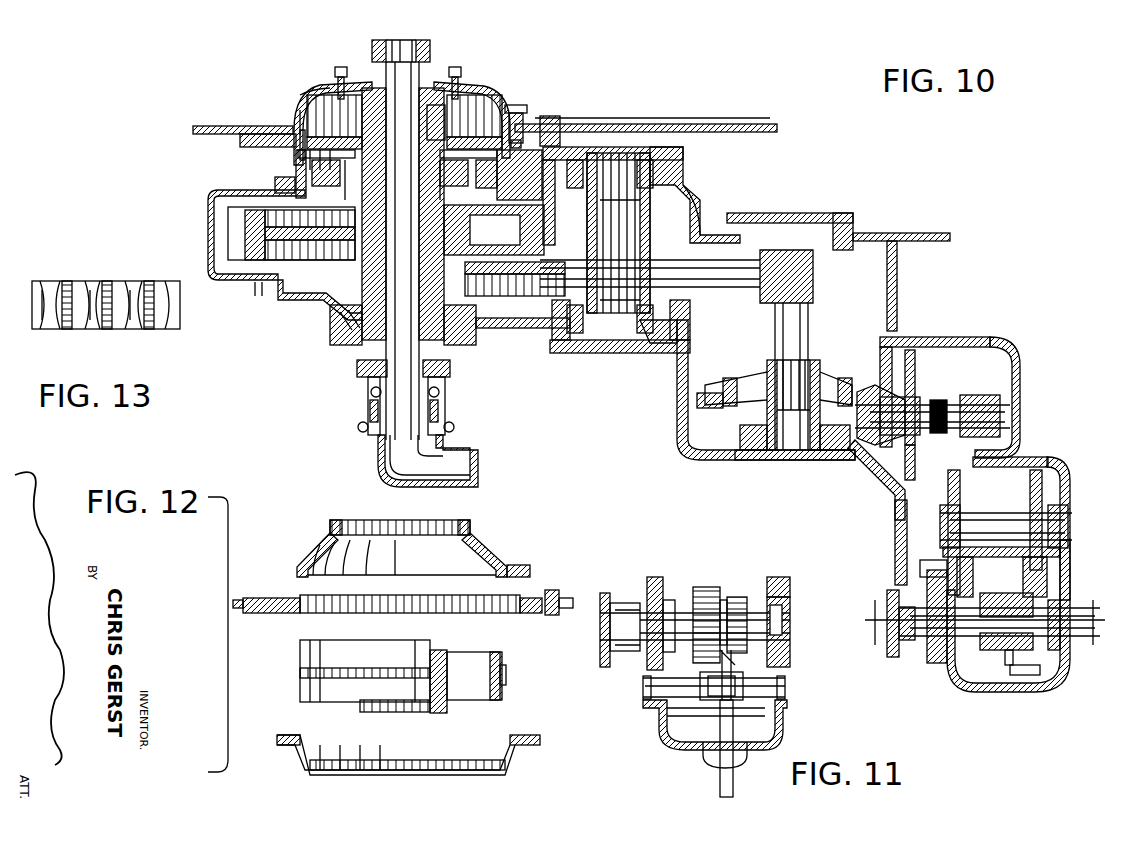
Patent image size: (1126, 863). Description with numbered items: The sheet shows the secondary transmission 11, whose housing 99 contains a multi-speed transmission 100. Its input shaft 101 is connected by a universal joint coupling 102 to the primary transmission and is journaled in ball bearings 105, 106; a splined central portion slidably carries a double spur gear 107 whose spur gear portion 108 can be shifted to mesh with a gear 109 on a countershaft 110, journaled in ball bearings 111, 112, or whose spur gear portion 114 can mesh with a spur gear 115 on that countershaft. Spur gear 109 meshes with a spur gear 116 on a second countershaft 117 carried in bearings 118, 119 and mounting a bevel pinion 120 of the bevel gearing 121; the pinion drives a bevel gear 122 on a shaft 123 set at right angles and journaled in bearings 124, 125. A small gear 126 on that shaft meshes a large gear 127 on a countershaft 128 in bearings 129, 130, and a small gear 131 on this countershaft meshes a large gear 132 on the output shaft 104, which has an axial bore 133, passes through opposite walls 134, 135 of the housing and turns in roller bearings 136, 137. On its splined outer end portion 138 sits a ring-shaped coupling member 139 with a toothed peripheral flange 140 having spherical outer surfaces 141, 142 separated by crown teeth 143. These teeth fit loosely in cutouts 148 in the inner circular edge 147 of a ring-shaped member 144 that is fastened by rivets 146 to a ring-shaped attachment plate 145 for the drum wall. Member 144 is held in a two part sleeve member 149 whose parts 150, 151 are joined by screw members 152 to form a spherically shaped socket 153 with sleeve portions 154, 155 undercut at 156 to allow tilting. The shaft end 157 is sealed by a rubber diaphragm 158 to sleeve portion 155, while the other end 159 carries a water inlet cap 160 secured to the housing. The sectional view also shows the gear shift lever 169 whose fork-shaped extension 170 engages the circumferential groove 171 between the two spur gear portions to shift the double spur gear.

In FIG. 10, the secondary transmission 11 is at (682, 452).
In FIG. 10, the housing 99 is at (677, 392).
In FIG. 11, the housing 99 is at (780, 570).
In FIG. 10, the multi-speed transmission 100 is at (1095, 577).
In FIG. 10, the input shaft 101 is at (980, 645).
In FIG. 11, the input shaft 101 is at (770, 630).
In FIG. 10, the universal joint coupling 102 is at (892, 657).
In FIG. 11, the universal joint coupling 102 is at (607, 667).
In FIG. 10, the output shaft 104 is at (445, 243).
In FIG. 10, the ball bearing 105 is at (935, 668).
In FIG. 11, the ball bearing 105 is at (648, 590).
In FIG. 10, the ball bearing 106 is at (1065, 668).
In FIG. 11, the ball bearing 106 is at (790, 602).
In FIG. 10, the double spur gear 107 is at (1008, 665).
In FIG. 11, the double spur gear 107 is at (724, 598).
In FIG. 10, the spur gear portion 108 is at (1010, 575).
In FIG. 11, the spur gear portion 108 is at (705, 587).
In FIG. 10, the spur gear 109 is at (948, 572).
In FIG. 10, the countershaft 110 is at (1000, 515).
In FIG. 10, the ball bearing 111 is at (920, 530).
In FIG. 10, the ball bearing 112 is at (1068, 500).
In FIG. 10, the spur gear portion 114 is at (1020, 655).
In FIG. 11, the spur gear portion 114 is at (740, 597).
In FIG. 10, the spur gear 115 is at (1060, 450).
In FIG. 10, the spur gear 116 is at (947, 467).
In FIG. 10, the second countershaft 117 is at (940, 400).
In FIG. 10, the bearing 118 is at (1000, 368).
In FIG. 10, the bearing 119 is at (872, 470).
In FIG. 10, the bevel pinion 120 is at (868, 445).
In FIG. 10, the bevel gearing 121 is at (862, 378).
In FIG. 10, the bevel gear 122 is at (760, 372).
In FIG. 10, the shaft 123 is at (775, 330).
In FIG. 10, the bearing 124 is at (845, 225).
In FIG. 10, the bearing 125 is at (752, 428).
In FIG. 10, the small gear 126 is at (810, 278).
In FIG. 10, the large gear 127 is at (708, 283).
In FIG. 10, the countershaft 128 is at (628, 246).
In FIG. 10, the bearing 129 is at (700, 161).
In FIG. 10, the bearing 130 is at (560, 355).
In FIG. 10, the small gear 131 is at (690, 200).
In FIG. 10, the large gear 132 is at (245, 232).
In FIG. 10, the axial bore 133 is at (362, 255).
In FIG. 10, the housing wall 134 is at (508, 328).
In FIG. 10, the housing wall 135 is at (265, 262).
In FIG. 10, the roller bearing 136 is at (330, 320).
In FIG. 10, the roller bearing 137 is at (460, 205).
In FIG. 10, the splined outer end portion 138 is at (460, 104).
In FIG. 10, the ring-shaped coupling member 139 is at (520, 108).
In FIG. 12, the ring-shaped coupling member 139 is at (505, 660).
In FIG. 12, the toothed peripheral flange 140 is at (300, 672).
In FIG. 13, the toothed peripheral flange 140 is at (120, 329).
In FIG. 10, the spherical outer surface 141 is at (498, 100).
In FIG. 12, the spherical outer surface 141 is at (360, 648).
In FIG. 10, the spherical outer surface 142 is at (515, 172).
In FIG. 12, the spherical outer surface 142 is at (330, 690).
In FIG. 10, the crown teeth 143 is at (312, 150).
In FIG. 12, the crown teeth 143 is at (405, 672).
In FIG. 13, the crown teeth 143 is at (150, 285).
In FIG. 10, the ring-shaped member 144 is at (240, 143).
In FIG. 12, the ring-shaped member 144 is at (262, 613).
In FIG. 10, the ring-shaped attachment plate 145 is at (640, 124).
In FIG. 12, the ring-shaped attachment plate 145 is at (562, 612).
In FIG. 10, the rivets 146 is at (560, 125).
In FIG. 12, the rivets 146 is at (560, 598).
In FIG. 12, the inner circular edge 147 is at (300, 600).
In FIG. 12, the cutouts 148 is at (440, 598).
In FIG. 10, the two part sleeve member 149 is at (305, 92).
In FIG. 10, the sleeve part 150 is at (303, 95).
In FIG. 12, the sleeve part 150 is at (298, 556).
In FIG. 10, the sleeve part 151 is at (296, 160).
In FIG. 12, the sleeve part 151 is at (295, 765).
In FIG. 10, the screw members 152 is at (525, 118).
In FIG. 10, the spherically shaped socket 153 is at (312, 172).
In FIG. 10, the sleeve portion 154 is at (282, 185).
In FIG. 12, the sleeve portion 154 is at (440, 760).
In FIG. 10, the sleeve portion 155 is at (298, 115).
In FIG. 12, the sleeve portion 155 is at (475, 540).
In FIG. 10, the undercut 156 is at (300, 135).
In FIG. 12, the undercut 156 is at (510, 565).
In FIG. 10, the shaft end 157 is at (460, 75).
In FIG. 10, the rubber diaphragm 158 is at (347, 75).
In FIG. 10, the shaft end 159 is at (357, 369).
In FIG. 10, the water inlet cap 160 is at (368, 402).
In FIG. 11, the gear shift lever 169 is at (720, 780).
In FIG. 11, the fork-shaped extension 170 is at (660, 712).
In FIG. 10, the circumferential groove 171 is at (1025, 675).